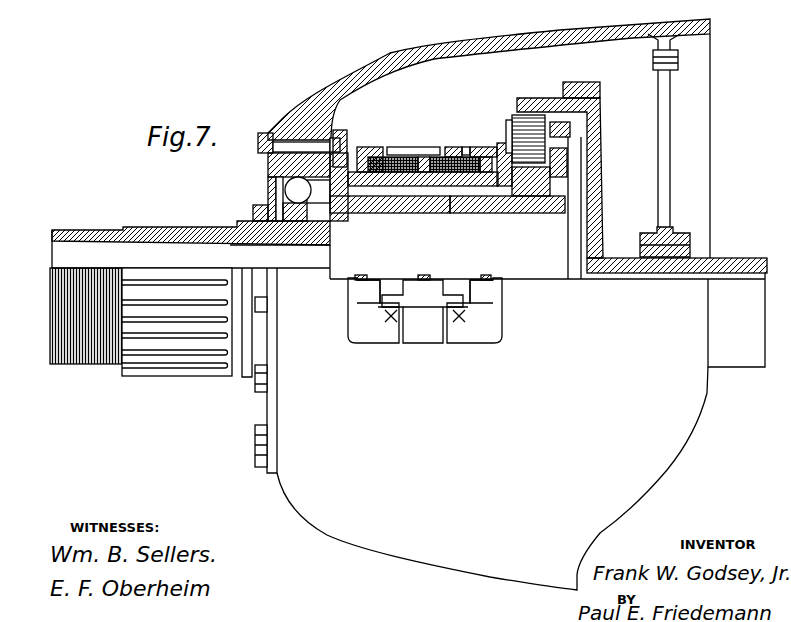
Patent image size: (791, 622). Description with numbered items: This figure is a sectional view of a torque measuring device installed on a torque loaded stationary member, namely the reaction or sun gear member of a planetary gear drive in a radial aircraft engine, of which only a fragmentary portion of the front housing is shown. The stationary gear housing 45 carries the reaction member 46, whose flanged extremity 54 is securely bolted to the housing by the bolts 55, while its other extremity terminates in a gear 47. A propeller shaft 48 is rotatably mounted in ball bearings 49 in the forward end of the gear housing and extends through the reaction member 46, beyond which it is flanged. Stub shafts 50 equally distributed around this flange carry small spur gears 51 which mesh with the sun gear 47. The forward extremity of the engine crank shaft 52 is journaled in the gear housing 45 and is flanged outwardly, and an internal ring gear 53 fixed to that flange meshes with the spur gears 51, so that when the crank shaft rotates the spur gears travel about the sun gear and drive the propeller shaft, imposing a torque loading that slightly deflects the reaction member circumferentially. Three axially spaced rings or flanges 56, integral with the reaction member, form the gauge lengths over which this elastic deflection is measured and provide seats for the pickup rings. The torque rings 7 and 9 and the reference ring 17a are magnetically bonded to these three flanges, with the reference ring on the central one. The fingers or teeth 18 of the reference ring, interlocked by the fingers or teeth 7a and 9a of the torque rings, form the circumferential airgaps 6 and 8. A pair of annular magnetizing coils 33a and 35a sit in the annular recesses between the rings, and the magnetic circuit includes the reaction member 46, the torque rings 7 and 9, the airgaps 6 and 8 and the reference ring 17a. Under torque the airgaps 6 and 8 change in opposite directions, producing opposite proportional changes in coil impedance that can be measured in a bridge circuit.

The stationary gear housing 45 is at (377, 74).
The flanged extremity 54 is at (340, 130).
The bolts 55 is at (265, 150).
The ball bearings 49 is at (289, 189).
The torque ring 9 is at (366, 146).
The airgap 8 is at (382, 303).
The fingers or teeth 9a is at (389, 324).
The fingers or teeth 18 is at (392, 148).
The reference ring 17a is at (422, 153).
The annular magnetizing coil 33a is at (400, 153).
The annular magnetizing coil 35a is at (456, 153).
The torque ring 7 is at (480, 157).
The airgap 6 is at (462, 307).
The fingers or teeth 7a is at (457, 324).
The rings or flanges 56 is at (352, 186).
The reaction member 46 is at (392, 210).
The propeller shaft 48 is at (458, 210).
The gear 47 is at (530, 205).
The stub shafts 50 is at (512, 128).
The spur gears 51 is at (507, 124).
The internal ring gear 53 is at (540, 99).
The engine crank shaft 52 is at (669, 273).